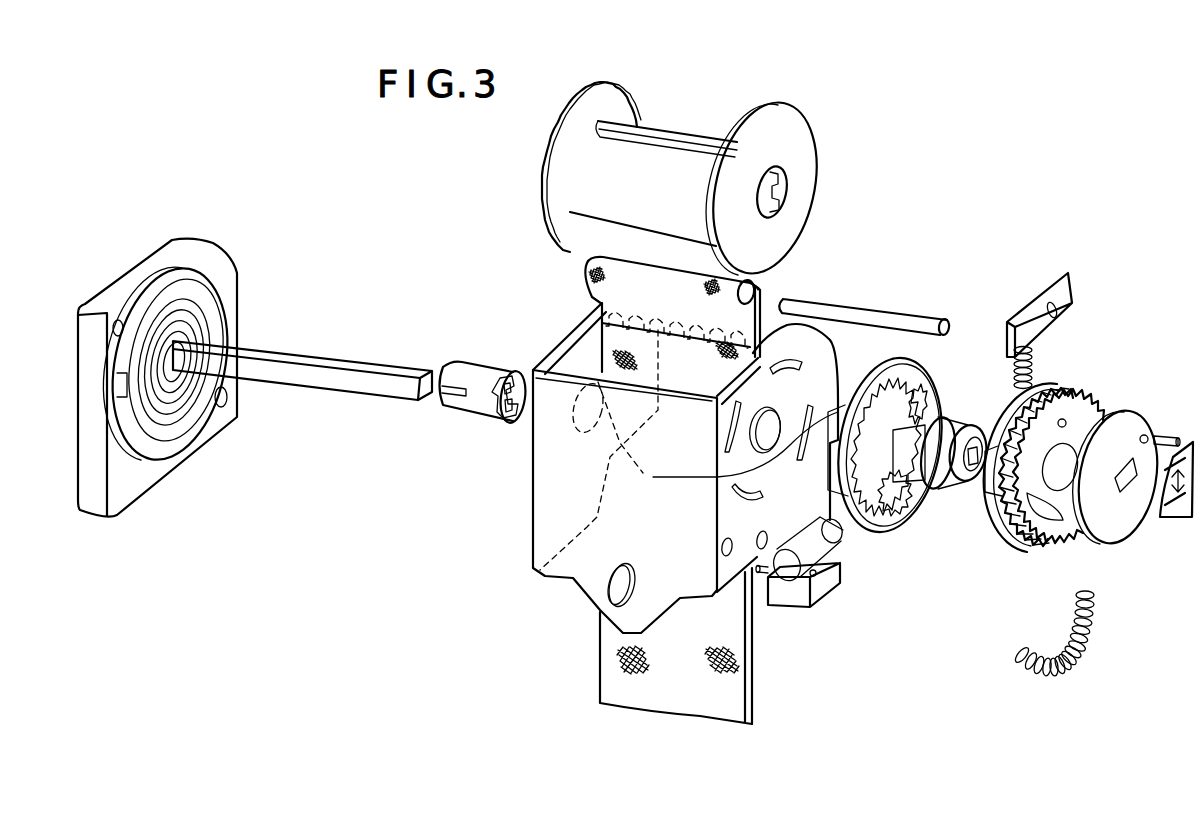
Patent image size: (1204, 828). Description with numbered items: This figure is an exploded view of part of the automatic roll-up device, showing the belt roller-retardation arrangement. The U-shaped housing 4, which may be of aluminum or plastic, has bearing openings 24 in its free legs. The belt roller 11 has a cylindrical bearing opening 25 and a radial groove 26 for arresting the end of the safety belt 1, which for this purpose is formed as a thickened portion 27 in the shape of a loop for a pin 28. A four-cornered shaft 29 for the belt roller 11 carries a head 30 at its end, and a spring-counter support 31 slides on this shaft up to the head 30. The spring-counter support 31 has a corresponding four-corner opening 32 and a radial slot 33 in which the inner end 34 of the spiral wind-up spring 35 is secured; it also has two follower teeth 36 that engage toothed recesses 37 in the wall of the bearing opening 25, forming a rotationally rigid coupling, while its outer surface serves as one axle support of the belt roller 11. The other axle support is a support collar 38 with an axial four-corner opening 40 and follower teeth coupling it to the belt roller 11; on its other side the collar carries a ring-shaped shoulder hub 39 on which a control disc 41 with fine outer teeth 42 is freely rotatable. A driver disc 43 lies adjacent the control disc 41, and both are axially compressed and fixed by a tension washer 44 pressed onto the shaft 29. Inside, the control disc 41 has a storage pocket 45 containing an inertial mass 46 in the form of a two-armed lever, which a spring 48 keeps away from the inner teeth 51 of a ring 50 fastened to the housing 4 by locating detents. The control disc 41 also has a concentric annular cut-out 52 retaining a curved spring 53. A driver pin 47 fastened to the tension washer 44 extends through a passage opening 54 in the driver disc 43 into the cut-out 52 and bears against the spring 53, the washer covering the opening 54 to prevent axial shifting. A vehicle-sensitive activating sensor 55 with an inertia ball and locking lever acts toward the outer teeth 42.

The safety belt 1 is at (745, 693).
The U-shaped housing 4 is at (537, 533).
The belt roller 11 is at (803, 140).
The bearing openings 24 is at (648, 476).
The cylindrical bearing opening 25 is at (780, 167).
The radial groove 26 is at (680, 140).
The thickened portion 27 is at (753, 298).
The pin 28 is at (858, 310).
The four-cornered shaft 29 is at (341, 366).
The head 30 is at (185, 340).
The spring-counter support 31 is at (472, 378).
The four-corner opening 32 is at (492, 398).
The radial slot 33 is at (465, 390).
The inner end of spiral wind-up spring 34 is at (183, 403).
The spiral wind-up spring 35 is at (180, 310).
The follower teeth 36 is at (510, 405).
The toothed recesses 37 is at (778, 197).
The support collar 38 is at (938, 483).
The ring-shaped shoulder hub 39 is at (953, 477).
The axial four-corner opening 40 is at (970, 432).
The control disc 41 is at (888, 454).
The fine outer teeth 42 is at (1050, 542).
The driver disc 43 is at (1147, 427).
The tension washer 44 is at (1172, 513).
The storage pocket 45 is at (1007, 408).
The inertial mass 46 is at (1050, 290).
The driver pin 47 is at (1167, 442).
The spring 48 is at (1038, 370).
The ring 50 is at (933, 390).
The inner teeth 51 is at (880, 505).
The concentric cut-out 52 is at (1062, 513).
The curved spring 53 is at (1074, 648).
The passage opening 54 is at (1144, 435).
The vehicle-sensitive activating sensor 55 is at (847, 591).